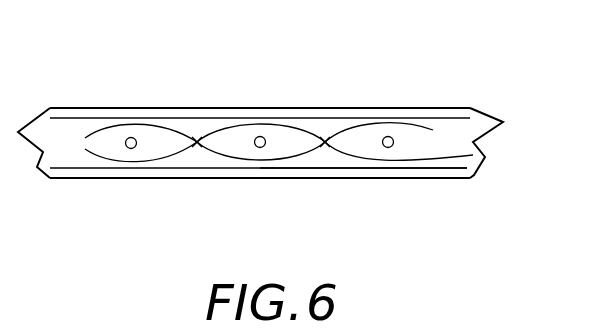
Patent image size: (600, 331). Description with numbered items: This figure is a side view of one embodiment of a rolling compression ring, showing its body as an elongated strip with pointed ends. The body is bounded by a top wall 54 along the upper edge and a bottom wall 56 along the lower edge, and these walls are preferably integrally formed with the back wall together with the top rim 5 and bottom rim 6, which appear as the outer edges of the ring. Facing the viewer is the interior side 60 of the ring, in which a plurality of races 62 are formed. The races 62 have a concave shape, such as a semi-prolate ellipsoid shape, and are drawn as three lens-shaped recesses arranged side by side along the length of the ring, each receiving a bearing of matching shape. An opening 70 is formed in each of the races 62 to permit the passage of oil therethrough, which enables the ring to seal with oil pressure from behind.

The top rim 5 is at (124, 108).
The bottom rim 6 is at (96, 171).
The top wall 54 is at (432, 107).
The bottom wall 56 is at (423, 178).
The interior side 60 is at (343, 161).
The races 62 is at (298, 142).
The openings 70 is at (267, 150).